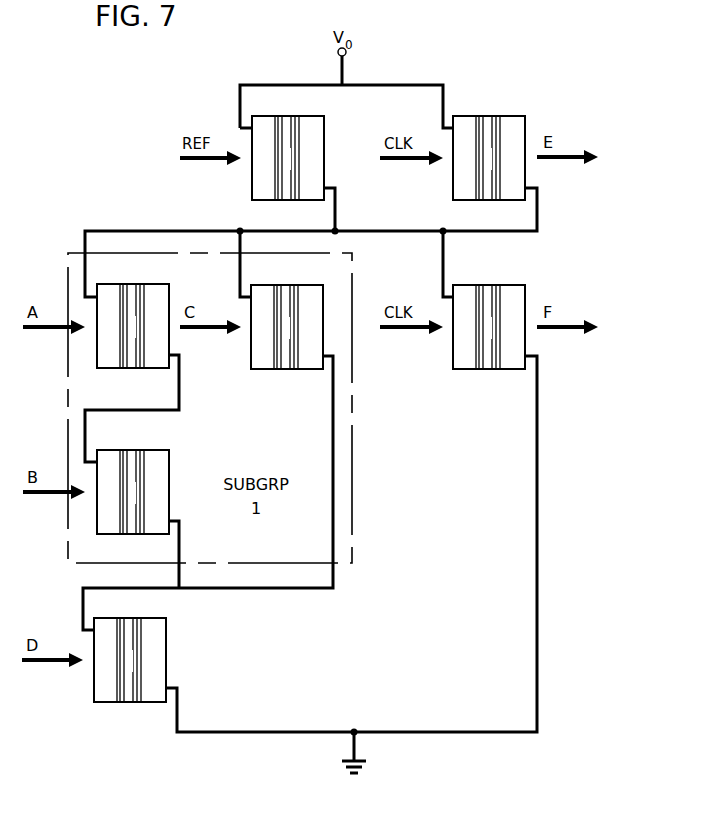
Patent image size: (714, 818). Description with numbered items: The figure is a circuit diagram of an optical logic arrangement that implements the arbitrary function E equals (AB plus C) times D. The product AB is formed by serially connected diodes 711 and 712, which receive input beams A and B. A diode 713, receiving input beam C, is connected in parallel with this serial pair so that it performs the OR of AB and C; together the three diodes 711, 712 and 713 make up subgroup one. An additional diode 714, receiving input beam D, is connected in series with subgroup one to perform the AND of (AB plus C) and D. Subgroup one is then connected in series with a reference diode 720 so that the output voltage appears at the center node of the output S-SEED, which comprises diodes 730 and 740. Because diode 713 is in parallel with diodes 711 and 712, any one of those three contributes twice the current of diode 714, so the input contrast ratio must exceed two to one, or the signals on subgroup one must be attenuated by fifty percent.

The diode 711 is at (135, 284).
The diode 712 is at (135, 450).
The diode 713 is at (289, 285).
The additional diode 714 is at (132, 618).
The reference diode 720 is at (290, 116).
The diode 730 is at (491, 116).
The diode 740 is at (491, 285).